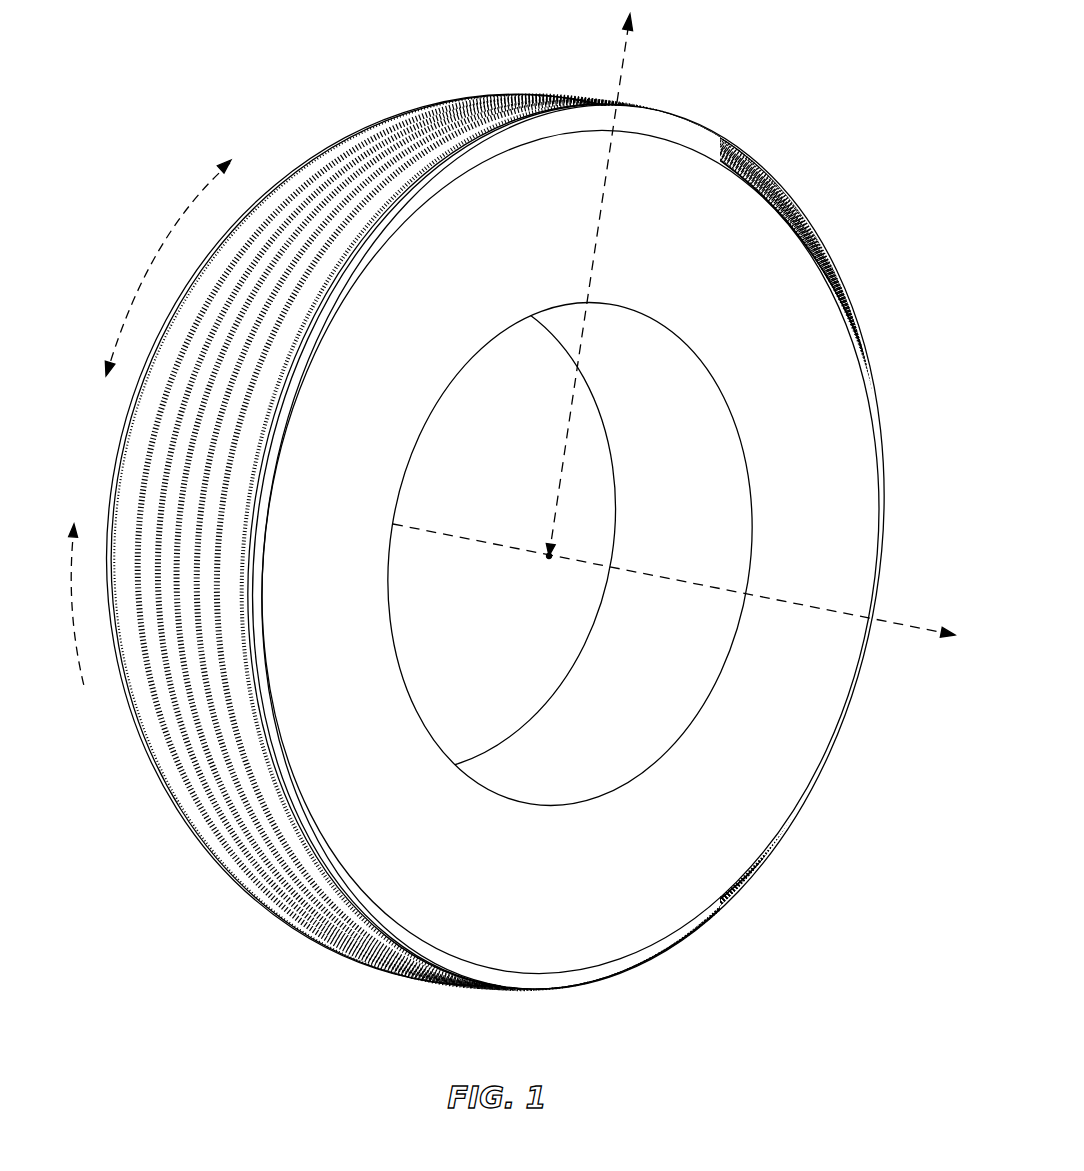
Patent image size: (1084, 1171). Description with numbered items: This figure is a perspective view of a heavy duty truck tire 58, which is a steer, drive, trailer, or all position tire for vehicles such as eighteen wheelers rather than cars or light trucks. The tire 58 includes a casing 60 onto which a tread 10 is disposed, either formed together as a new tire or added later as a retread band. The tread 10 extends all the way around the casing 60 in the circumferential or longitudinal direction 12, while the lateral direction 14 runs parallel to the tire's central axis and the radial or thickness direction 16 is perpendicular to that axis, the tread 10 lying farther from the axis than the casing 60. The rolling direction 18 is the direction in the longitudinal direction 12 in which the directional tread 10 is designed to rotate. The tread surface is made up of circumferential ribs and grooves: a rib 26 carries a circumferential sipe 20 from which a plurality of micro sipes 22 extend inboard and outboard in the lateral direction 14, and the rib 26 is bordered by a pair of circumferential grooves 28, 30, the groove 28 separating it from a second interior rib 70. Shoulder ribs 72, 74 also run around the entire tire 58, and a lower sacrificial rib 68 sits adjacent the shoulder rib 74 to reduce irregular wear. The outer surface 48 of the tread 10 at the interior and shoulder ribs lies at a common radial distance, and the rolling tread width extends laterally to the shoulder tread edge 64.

The tread 10 is at (388, 115).
The longitudinal direction 12 is at (158, 262).
The lateral direction 14 is at (924, 629).
The thickness direction 16 is at (595, 253).
The rolling direction 18 is at (74, 607).
The circumferential sipe 20 is at (307, 267).
The micro sipes 22 is at (551, 545).
The rib 26 is at (542, 544).
The circumferential groove 28 is at (248, 293).
The circumferential groove 30 is at (270, 342).
The outer surface 48 is at (514, 542).
The tire 58 is at (786, 50).
The casing 60 is at (828, 327).
The shoulder tread edge 64 is at (259, 714).
The sacrificial rib 68 is at (477, 148).
The interior rib 70 is at (158, 460).
The shoulder rib 72 is at (145, 420).
The shoulder rib 74 is at (318, 888).